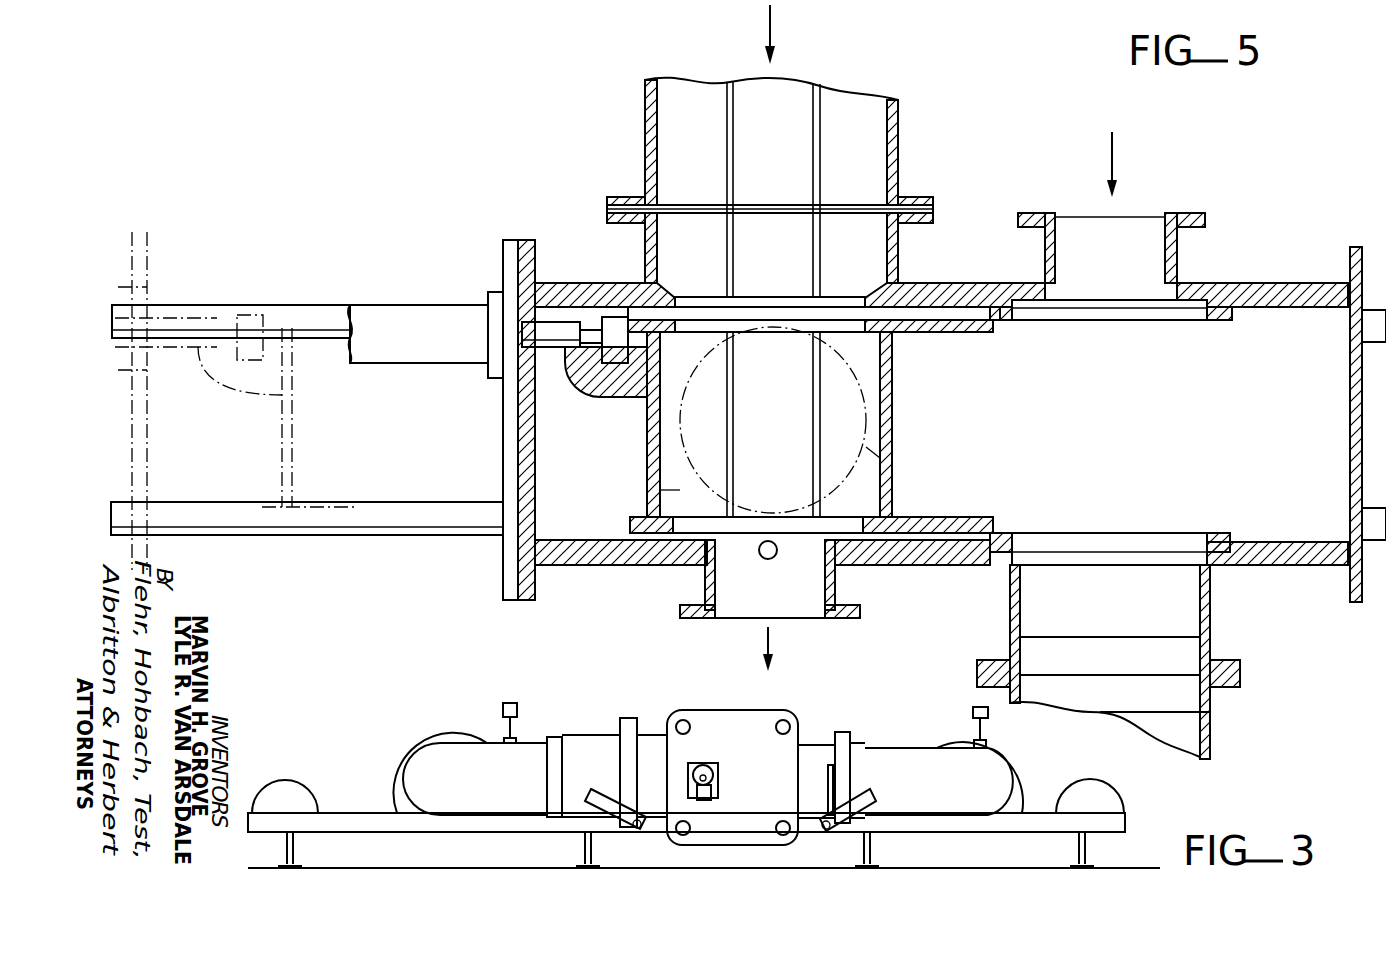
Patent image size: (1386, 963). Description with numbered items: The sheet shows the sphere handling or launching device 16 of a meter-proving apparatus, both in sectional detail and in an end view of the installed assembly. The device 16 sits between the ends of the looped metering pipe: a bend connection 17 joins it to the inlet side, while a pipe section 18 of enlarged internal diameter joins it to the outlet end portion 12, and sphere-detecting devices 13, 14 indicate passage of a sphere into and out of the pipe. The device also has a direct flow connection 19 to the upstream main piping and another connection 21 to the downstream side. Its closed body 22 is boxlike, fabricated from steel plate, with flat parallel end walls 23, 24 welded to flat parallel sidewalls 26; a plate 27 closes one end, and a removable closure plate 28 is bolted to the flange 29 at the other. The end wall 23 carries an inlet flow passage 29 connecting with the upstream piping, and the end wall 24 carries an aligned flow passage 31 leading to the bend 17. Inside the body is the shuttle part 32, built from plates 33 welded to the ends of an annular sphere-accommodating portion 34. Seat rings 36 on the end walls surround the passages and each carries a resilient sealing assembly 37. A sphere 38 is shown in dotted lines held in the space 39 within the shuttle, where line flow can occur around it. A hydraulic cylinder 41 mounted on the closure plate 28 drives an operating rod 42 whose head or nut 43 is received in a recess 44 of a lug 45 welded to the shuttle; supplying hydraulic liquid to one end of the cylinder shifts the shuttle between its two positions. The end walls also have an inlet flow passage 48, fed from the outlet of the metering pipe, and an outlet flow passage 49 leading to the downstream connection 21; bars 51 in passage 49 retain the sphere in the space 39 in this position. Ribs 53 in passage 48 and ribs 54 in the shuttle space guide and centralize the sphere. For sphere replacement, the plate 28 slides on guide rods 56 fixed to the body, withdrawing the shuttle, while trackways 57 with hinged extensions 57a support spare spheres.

In FIG. 3, the outlet end portion 12 is at (499, 781).
In FIG. 3, the sphere-detecting device 13 is at (972, 714).
In FIG. 3, the sphere-detecting device 14 is at (517, 708).
In FIG. 5, the sphere handling or launching device 16 is at (970, 248).
In FIG. 3, the sphere handling or launching device 16 is at (662, 705).
In FIG. 5, the bend connection 17 is at (1212, 736).
In FIG. 3, the bend connection 17 is at (943, 784).
In FIG. 5, the pipe section of enlarged internal diameter 18 is at (900, 122).
In FIG. 3, the pipe section of enlarged internal diameter 18 is at (585, 755).
In FIG. 5, the direct flow connection 19 is at (1182, 254).
In FIG. 5, the connection 21 is at (705, 590).
In FIG. 3, the connection 21 is at (815, 780).
In FIG. 5, the closed body 22 is at (610, 574).
In FIG. 5, the end wall 23 is at (1293, 283).
In FIG. 5, the end wall 24 is at (1293, 568).
In FIG. 5, the sidewalls 26 is at (1295, 443).
In FIG. 5, the plate 27 is at (1360, 600).
In FIG. 5, the closure plate 28 is at (515, 430).
In FIG. 5, the inlet flow passage 29 is at (1118, 278).
In FIG. 5, the flow passage 31 is at (1115, 578).
In FIG. 5, the shuttle part 32 is at (630, 454).
In FIG. 5, the plates 33 is at (962, 327).
In FIG. 5, the sphere-accommodating portion 34 is at (895, 420).
In FIG. 5, the seat rings 36 is at (1185, 312).
In FIG. 5, the sealing assembly 37 is at (1222, 534).
In FIG. 5, the sphere 38 is at (866, 447).
In FIG. 5, the space 39 is at (680, 490).
In FIG. 5, the hydraulic cylinder 41 is at (412, 306).
In FIG. 5, the operating rod 42 is at (551, 328).
In FIG. 5, the head or nut 43 is at (613, 330).
In FIG. 5, the recess 44 is at (600, 385).
In FIG. 5, the lug 45 is at (623, 392).
In FIG. 5, the inlet flow passage 48 is at (782, 245).
In FIG. 5, the outlet flow passage 49 is at (792, 592).
In FIG. 5, the bars 51 is at (763, 558).
In FIG. 5, the ribs 53 is at (812, 128).
In FIG. 5, the ribs 54 is at (812, 423).
In FIG. 5, the guide rods 56 is at (245, 504).
In FIG. 3, the trackways 57 is at (392, 832).
In FIG. 3, the hinged extensions 57a is at (630, 826).